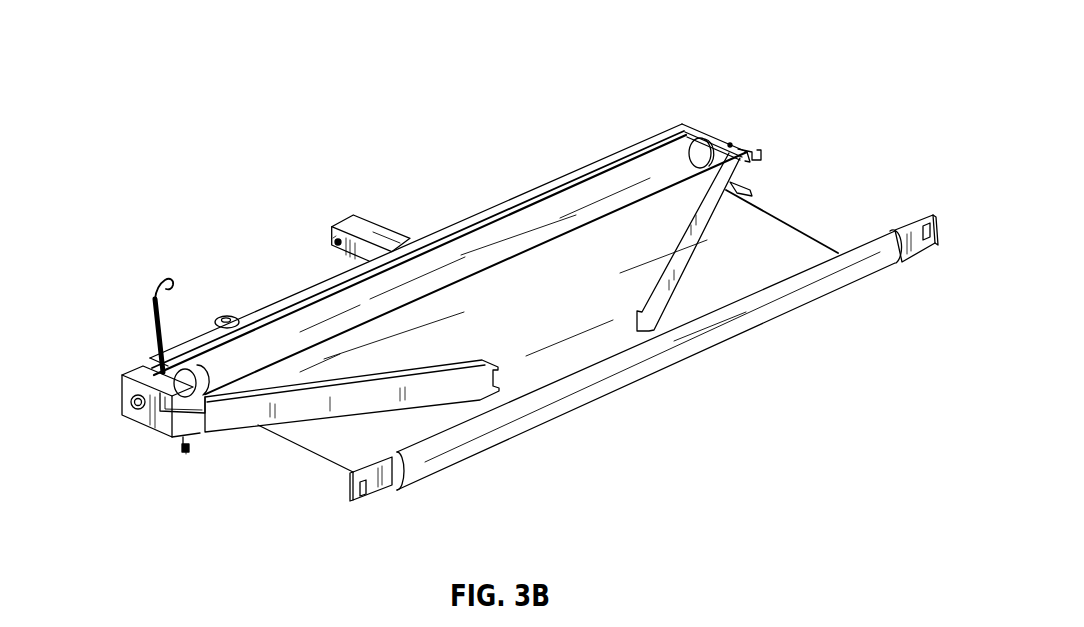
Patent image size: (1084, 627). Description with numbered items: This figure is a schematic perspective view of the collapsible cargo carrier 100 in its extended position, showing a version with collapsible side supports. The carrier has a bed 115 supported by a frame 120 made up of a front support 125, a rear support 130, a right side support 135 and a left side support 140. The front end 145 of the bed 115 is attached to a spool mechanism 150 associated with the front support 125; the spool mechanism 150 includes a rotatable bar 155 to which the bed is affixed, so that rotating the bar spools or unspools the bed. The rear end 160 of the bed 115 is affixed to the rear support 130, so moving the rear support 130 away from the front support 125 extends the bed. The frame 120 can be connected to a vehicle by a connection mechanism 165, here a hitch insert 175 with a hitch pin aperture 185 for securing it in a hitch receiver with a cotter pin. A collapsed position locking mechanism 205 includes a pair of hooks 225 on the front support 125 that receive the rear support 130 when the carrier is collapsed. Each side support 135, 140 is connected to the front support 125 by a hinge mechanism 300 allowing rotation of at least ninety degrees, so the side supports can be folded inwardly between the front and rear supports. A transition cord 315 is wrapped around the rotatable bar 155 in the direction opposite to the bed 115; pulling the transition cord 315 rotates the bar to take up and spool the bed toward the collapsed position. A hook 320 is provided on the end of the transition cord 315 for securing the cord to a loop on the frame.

The collapsible cargo carrier 100 is at (200, 82).
The bed 115 is at (802, 248).
The frame 120 is at (130, 270).
The front support 125 is at (547, 183).
The rear support 130 is at (392, 475).
The right side support 135 is at (708, 223).
The left side support 140 is at (337, 402).
The front end of the bed 145 is at (482, 273).
The spool mechanism 150 is at (120, 400).
The rotatable bar 155 is at (692, 143).
The rear end of the bed 160 is at (778, 316).
The connection mechanism 165 is at (348, 198).
The hitch insert 175 is at (401, 233).
The hitch pin aperture 185 is at (330, 243).
The collapsed position locking mechanism 205 is at (828, 110).
The hooks 225 is at (757, 148).
The hinge mechanism 300 is at (188, 464).
The transition cord 315 is at (151, 328).
The hook 320 is at (163, 280).